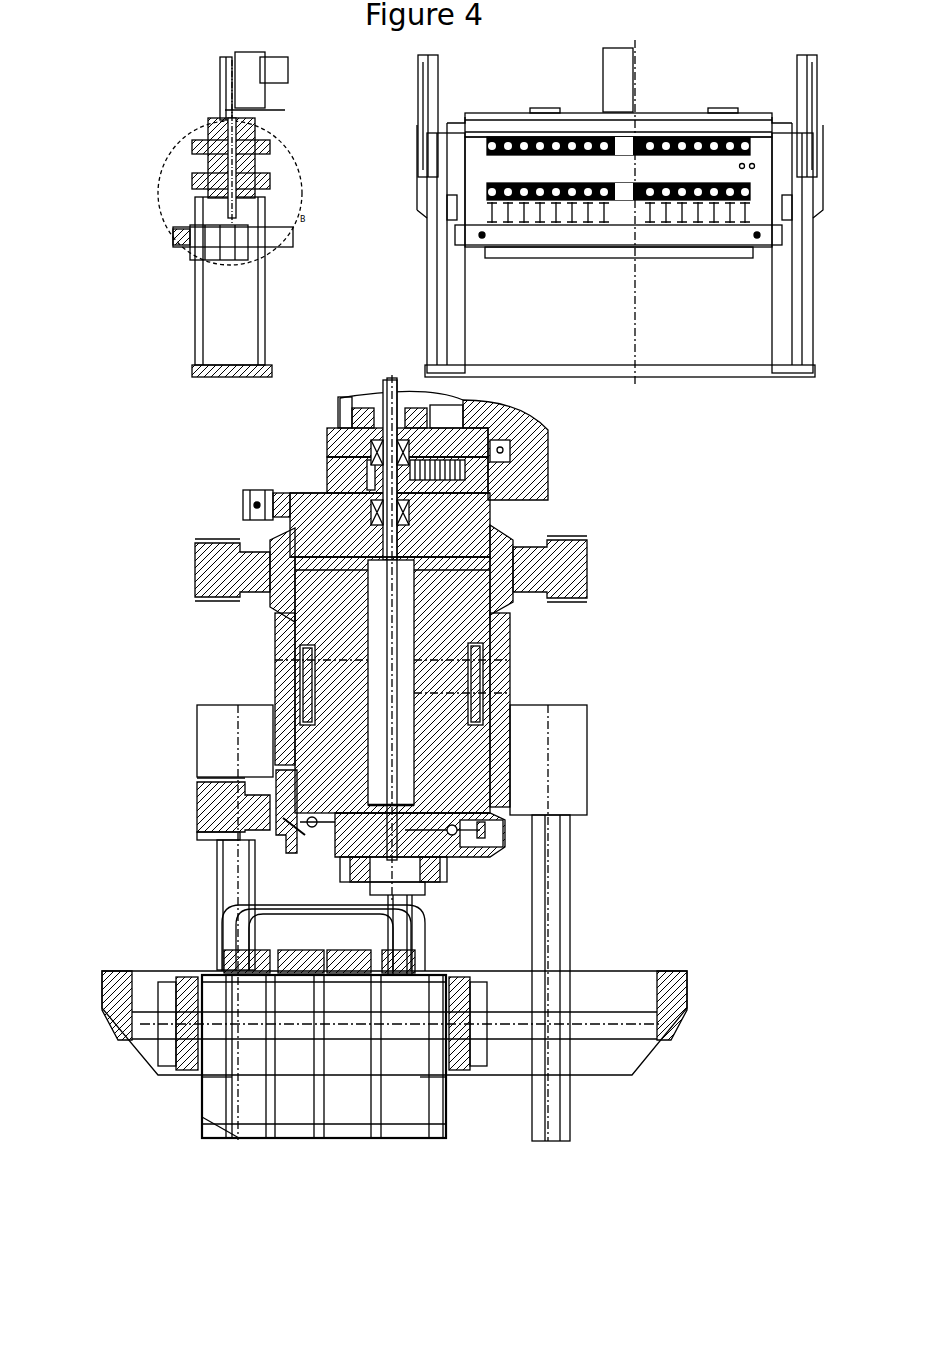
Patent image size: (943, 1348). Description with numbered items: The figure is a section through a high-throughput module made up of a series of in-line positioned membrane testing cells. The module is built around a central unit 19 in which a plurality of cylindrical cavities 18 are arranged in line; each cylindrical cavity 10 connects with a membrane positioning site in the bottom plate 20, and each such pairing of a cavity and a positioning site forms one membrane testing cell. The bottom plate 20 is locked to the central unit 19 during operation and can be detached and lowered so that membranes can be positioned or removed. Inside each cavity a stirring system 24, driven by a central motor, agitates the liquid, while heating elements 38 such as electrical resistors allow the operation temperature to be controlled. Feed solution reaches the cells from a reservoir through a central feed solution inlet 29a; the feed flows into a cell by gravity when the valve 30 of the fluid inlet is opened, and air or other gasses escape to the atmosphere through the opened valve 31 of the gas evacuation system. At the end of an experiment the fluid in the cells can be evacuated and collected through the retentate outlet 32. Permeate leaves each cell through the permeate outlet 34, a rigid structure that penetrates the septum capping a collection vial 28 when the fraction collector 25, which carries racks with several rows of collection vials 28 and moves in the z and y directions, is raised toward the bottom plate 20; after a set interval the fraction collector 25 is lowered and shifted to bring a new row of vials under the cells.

The cylindrical cavity 10 is at (449, 973).
The cylindrical cavities 18 is at (402, 631).
The central unit 19 is at (502, 753).
The bottom plate 20 is at (456, 822).
The stirring systems 24 is at (390, 693).
The fraction collector 25 is at (591, 1000).
The collection vials 28 is at (414, 1060).
The central feed solution inlet 29a is at (243, 500).
The valve of fluid inlet 30 is at (218, 560).
The valve of the gas evacuation system 31 is at (568, 558).
The retentate outlet 32 is at (220, 797).
The permeate outlet 34 is at (220, 895).
The heating elements 38 is at (308, 683).